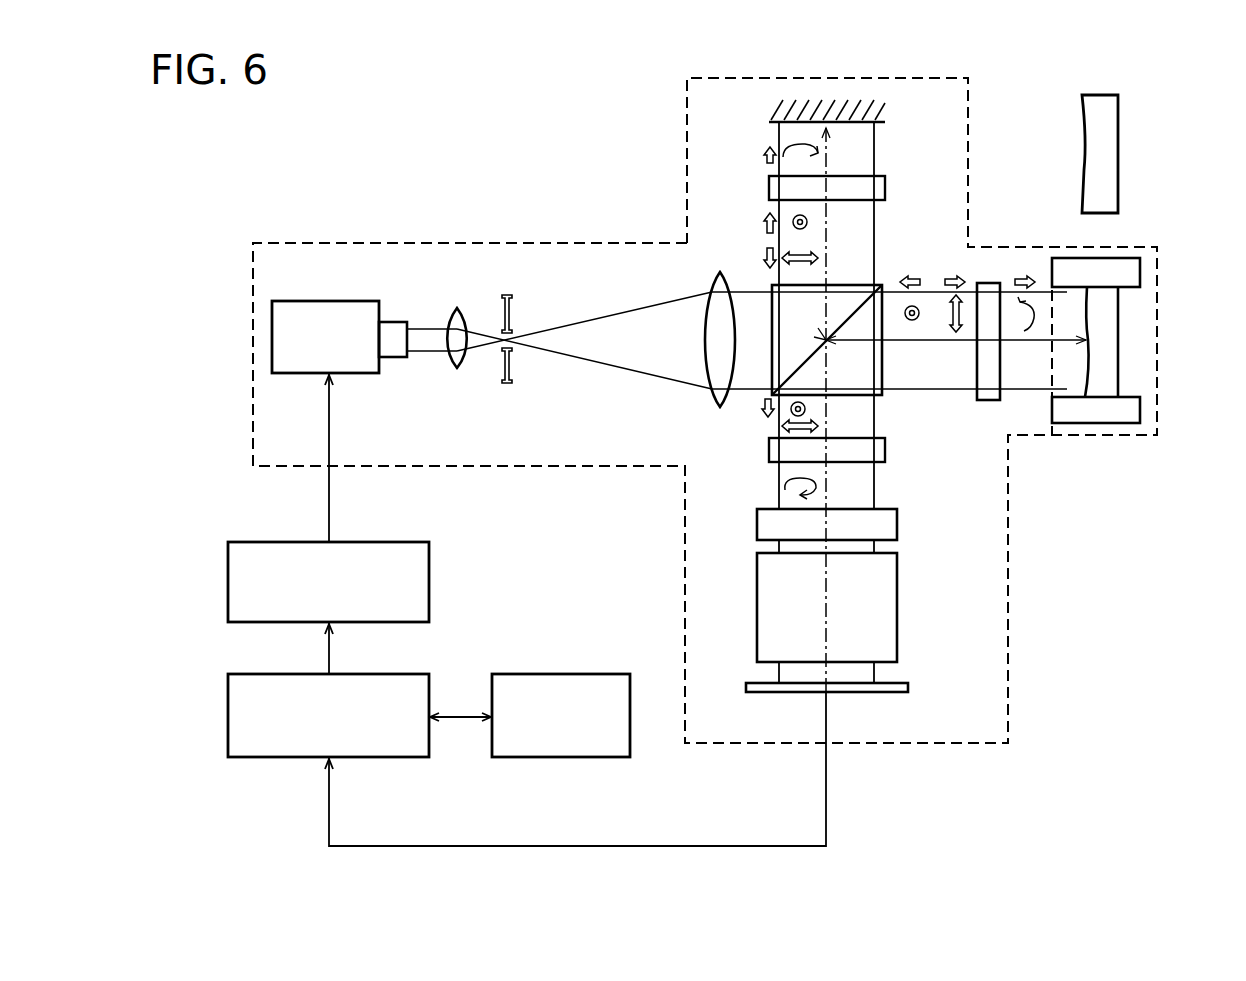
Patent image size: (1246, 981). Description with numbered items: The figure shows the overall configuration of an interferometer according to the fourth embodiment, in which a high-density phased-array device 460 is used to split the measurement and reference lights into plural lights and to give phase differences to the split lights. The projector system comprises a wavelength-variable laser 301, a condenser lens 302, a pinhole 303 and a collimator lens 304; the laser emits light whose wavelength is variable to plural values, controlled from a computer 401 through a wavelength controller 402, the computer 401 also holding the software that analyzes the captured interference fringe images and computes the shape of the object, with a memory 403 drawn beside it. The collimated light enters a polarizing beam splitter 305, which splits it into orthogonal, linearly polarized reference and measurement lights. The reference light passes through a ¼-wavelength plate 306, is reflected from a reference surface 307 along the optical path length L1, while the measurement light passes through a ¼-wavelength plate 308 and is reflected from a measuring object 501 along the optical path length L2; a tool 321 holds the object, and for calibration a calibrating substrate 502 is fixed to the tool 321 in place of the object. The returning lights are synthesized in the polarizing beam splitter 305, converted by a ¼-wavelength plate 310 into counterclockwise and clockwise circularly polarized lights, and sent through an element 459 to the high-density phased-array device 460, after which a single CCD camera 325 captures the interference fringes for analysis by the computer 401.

The wavelength-variable laser 301 is at (296, 373).
The condenser lens 302 is at (457, 368).
The pinhole 303 is at (515, 345).
The collimator lens 304 is at (725, 272).
The polarizing beam splitter 305 is at (884, 397).
The 1/4-wavelength plate 306 is at (885, 188).
The reference surface 307 is at (856, 124).
The 1/4-wavelength plate 308 is at (990, 401).
The 1/4-wavelength plate 310 is at (769, 451).
The tool 321 is at (1100, 423).
The CCD camera 325 is at (908, 688).
The computer 401 is at (228, 716).
The wavelength controller 402 is at (228, 585).
The memory 403 is at (558, 674).
The imaging lens 459 is at (897, 525).
The high-density phased-array device 460 is at (897, 605).
The measuring object 501 is at (1120, 340).
The calibrating substrate 502 is at (1120, 157).
The optical path length of the reference light L1 is at (840, 410).
The optical path length of the measurement light L2 is at (950, 349).